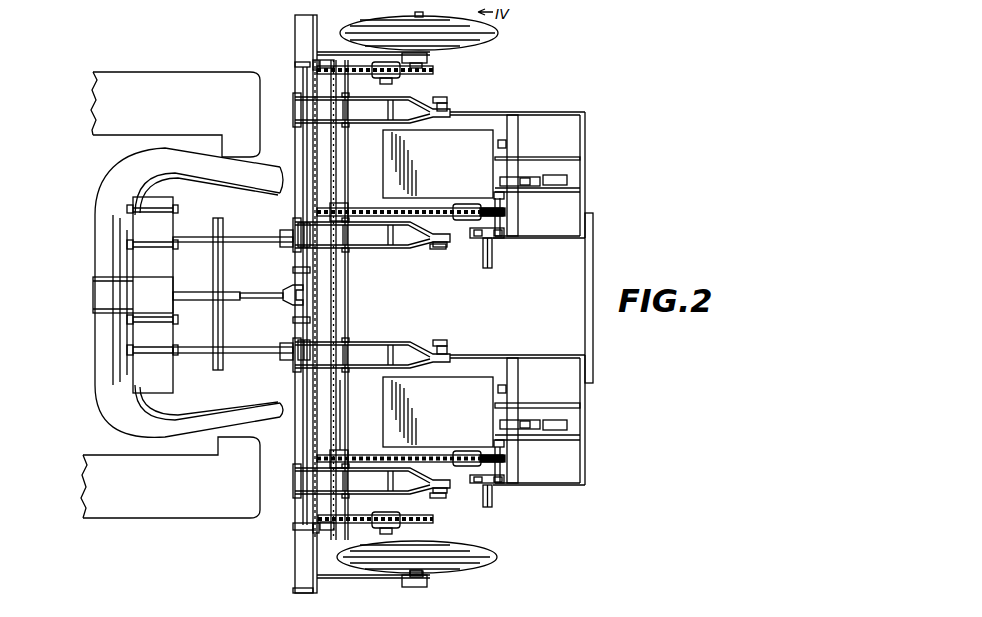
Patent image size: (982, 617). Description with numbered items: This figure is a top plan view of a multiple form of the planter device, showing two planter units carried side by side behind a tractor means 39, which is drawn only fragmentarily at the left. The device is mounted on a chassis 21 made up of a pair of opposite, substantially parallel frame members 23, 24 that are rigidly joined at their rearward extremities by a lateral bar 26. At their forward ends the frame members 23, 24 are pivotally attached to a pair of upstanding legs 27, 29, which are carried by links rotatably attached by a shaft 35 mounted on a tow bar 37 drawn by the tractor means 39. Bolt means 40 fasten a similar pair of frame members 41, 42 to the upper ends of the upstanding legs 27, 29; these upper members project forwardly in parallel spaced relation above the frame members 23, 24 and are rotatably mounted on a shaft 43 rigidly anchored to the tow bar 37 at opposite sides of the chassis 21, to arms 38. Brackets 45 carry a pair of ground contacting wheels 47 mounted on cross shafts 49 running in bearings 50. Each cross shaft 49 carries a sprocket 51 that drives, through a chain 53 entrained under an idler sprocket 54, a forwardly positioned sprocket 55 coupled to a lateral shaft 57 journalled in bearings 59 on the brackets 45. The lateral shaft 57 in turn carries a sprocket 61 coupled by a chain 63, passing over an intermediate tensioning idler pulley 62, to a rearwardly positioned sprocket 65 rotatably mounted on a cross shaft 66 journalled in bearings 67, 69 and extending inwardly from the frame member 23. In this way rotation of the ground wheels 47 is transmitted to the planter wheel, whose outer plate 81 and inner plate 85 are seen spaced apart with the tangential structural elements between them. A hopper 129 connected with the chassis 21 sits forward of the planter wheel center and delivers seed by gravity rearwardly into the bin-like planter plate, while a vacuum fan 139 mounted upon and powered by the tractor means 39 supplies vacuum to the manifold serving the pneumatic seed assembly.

The chassis 21 is at (622, 111).
The frame member 23 is at (538, 238).
The frame member 24 is at (562, 112).
The lateral bar 26 is at (585, 209).
The upstanding leg 27 is at (437, 249).
The upstanding leg 29 is at (448, 108).
The shaft 35 is at (392, 97).
The tow bar 37 is at (296, 31).
The arm 38 is at (296, 67).
The tractor means 39 is at (105, 98).
The bolt means 40 is at (445, 104).
The frame member 41 is at (346, 127).
The frame member 42 is at (420, 104).
The shaft 43 is at (298, 151).
The bracket 45 is at (335, 52).
The ground contacting wheel 47 is at (498, 38).
The cross shaft 49 is at (424, 17).
The bearing 50 is at (428, 60).
The sprocket 51 is at (434, 74).
The chain 53 is at (420, 76).
The idler sprocket 54 is at (384, 78).
The sprocket 55 is at (304, 86).
The lateral shaft 57 is at (345, 425).
The bearing 59 is at (316, 51).
The sprocket 61 is at (340, 210).
The tensioning idler pulley 62 is at (470, 205).
The chain 63 is at (370, 208).
The sprocket 65 is at (506, 214).
The cross shaft 66 is at (492, 262).
The bearing 67 is at (502, 237).
The bearing 69 is at (505, 200).
The outer plate 81 is at (585, 183).
The inner plate 85 is at (553, 180).
The hopper 129 is at (474, 151).
The vacuum fan 139 is at (168, 228).